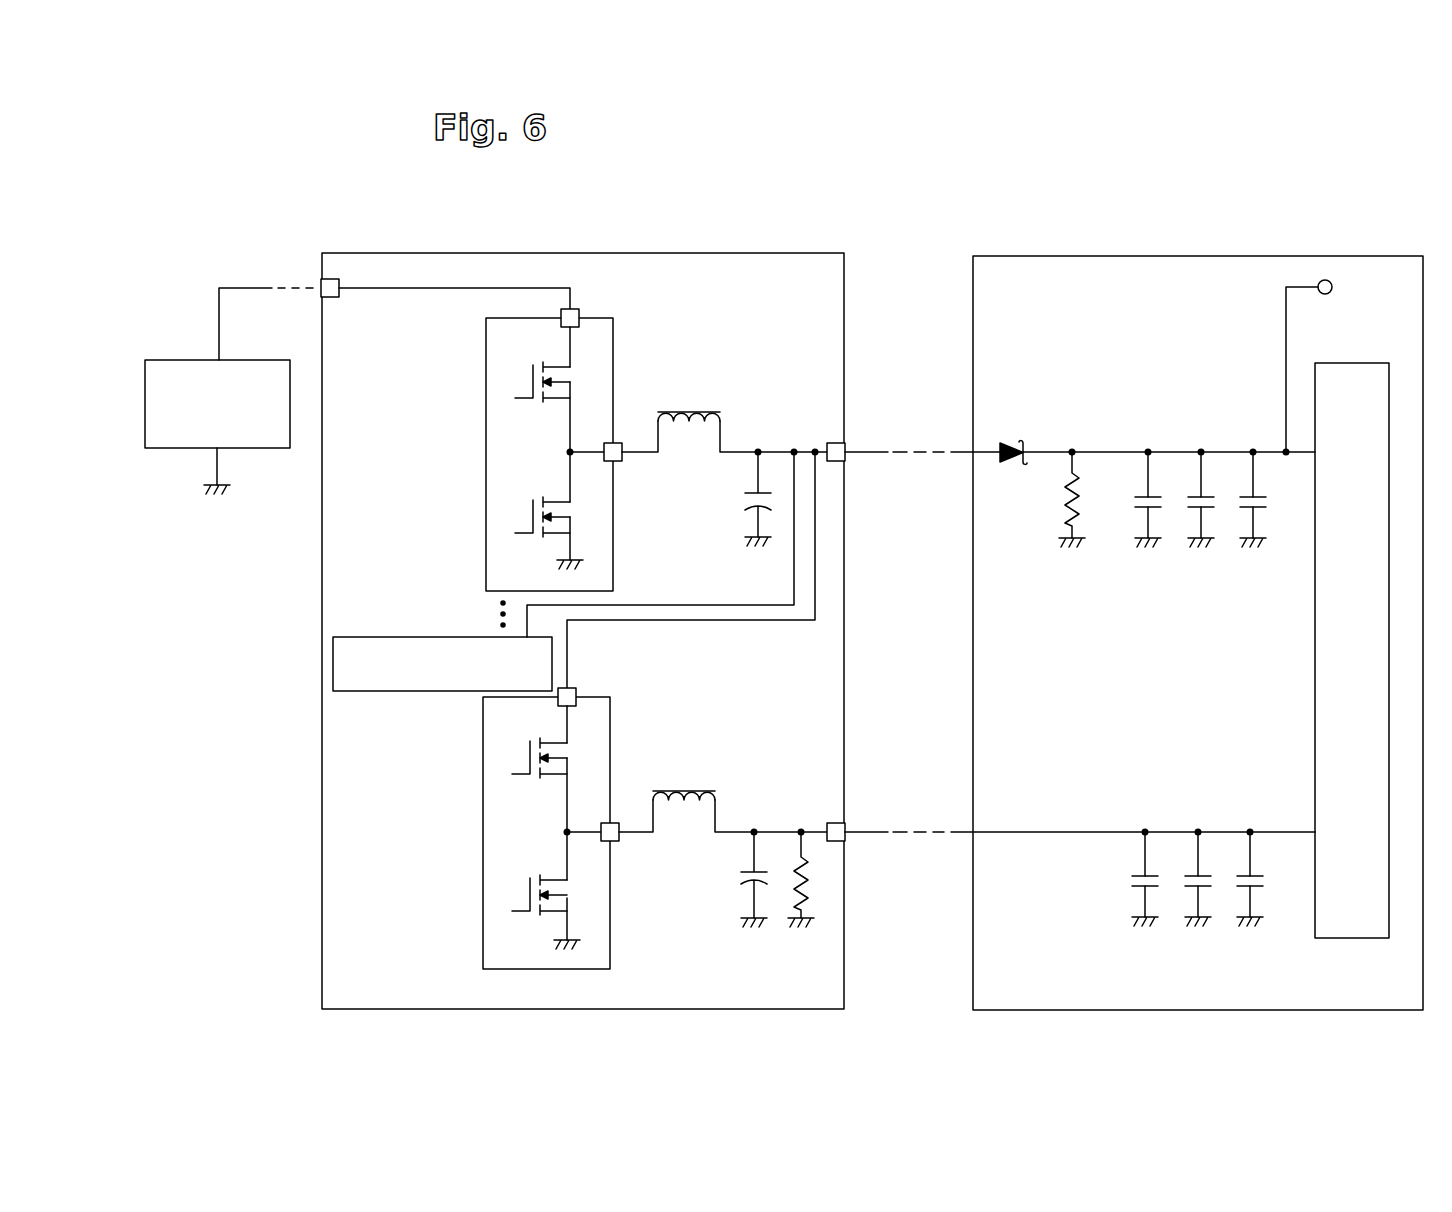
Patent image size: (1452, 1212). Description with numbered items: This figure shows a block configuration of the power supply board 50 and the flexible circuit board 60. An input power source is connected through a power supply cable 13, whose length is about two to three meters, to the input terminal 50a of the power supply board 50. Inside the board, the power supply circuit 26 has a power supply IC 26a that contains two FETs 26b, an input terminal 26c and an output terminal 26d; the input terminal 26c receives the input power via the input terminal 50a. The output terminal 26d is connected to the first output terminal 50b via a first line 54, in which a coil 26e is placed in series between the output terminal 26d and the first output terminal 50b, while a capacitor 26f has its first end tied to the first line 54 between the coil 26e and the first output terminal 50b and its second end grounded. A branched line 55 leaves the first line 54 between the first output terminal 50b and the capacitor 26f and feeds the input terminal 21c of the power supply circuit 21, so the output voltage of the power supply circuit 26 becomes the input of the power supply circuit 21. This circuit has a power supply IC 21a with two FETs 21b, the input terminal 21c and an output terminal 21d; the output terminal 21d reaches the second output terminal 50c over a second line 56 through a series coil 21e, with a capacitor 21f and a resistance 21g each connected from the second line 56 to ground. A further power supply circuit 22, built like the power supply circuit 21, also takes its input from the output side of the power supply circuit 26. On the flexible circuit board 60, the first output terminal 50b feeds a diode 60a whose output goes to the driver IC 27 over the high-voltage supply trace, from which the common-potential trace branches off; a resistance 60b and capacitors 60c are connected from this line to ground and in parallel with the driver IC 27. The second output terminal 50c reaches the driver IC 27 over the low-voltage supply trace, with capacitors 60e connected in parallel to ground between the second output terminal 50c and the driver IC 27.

The power supply cable 13 is at (247, 288).
The power supply board 50 is at (635, 253).
The input terminal 50a is at (335, 298).
The first output terminal 50b is at (833, 443).
The second output terminal 50c is at (833, 823).
The power supply circuit 26 is at (636, 332).
The power supply IC 26a is at (614, 573).
The FETs 26b is at (552, 407).
The input terminal 26c is at (579, 310).
The output terminal 26d is at (622, 458).
The coil 26e is at (690, 412).
The capacitor 26f is at (740, 500).
The first line 54 is at (775, 450).
The branched line 55 is at (716, 620).
The second line 56 is at (758, 830).
The power supply circuit 21 is at (695, 693).
The power supply IC 21a is at (612, 950).
The FETs 21b is at (548, 785).
The input terminal 21c is at (575, 690).
The output terminal 21d is at (620, 838).
The coil 21e is at (678, 790).
The capacitor 21f is at (735, 878).
The resistance 21g is at (818, 880).
The power supply circuit 22 is at (395, 637).
The flexible circuit board 60 is at (1215, 256).
The diode 60a is at (1022, 443).
The resistance 60b is at (1062, 497).
The capacitors 60c is at (1178, 572).
The capacitors 60e is at (1178, 952).
The driver IC 27 is at (1343, 363).